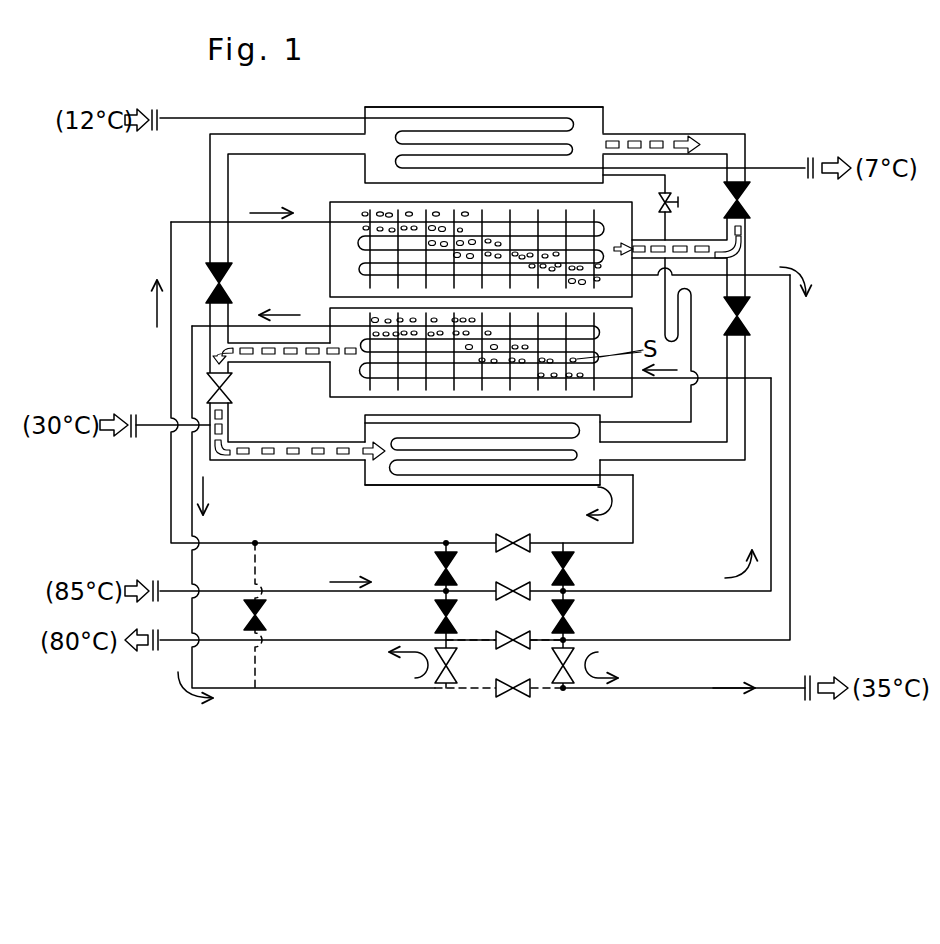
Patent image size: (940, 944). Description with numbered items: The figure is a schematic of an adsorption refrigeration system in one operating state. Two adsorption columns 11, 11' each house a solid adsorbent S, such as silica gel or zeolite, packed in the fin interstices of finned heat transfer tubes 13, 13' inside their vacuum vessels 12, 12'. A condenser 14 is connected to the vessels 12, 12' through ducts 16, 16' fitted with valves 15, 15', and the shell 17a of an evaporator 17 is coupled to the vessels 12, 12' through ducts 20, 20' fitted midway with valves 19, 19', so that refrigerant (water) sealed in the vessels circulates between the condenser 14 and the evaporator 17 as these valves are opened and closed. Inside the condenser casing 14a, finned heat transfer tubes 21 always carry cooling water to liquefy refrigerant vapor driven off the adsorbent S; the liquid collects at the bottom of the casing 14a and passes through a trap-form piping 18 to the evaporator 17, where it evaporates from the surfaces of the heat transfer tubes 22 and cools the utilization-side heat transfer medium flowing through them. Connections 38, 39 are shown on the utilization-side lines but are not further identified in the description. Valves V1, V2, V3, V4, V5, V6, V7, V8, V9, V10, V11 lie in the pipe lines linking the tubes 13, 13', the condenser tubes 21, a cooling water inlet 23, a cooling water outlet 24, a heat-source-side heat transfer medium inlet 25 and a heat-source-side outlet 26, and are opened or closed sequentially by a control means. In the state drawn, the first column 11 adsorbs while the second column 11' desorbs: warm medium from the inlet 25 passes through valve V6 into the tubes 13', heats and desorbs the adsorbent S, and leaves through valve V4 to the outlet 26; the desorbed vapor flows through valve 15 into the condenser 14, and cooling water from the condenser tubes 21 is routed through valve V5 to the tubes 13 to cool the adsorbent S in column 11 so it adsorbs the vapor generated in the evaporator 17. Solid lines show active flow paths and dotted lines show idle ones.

The first adsorption column 11 is at (448, 249).
The second adsorption column 11' is at (447, 364).
The vacuum vessel 12 is at (433, 234).
The vacuum vessel 12' is at (433, 337).
The heat transfer tubes 13 is at (480, 229).
The heat transfer tubes 13' is at (481, 339).
The condenser 14 is at (380, 487).
The condenser casing 14a is at (432, 487).
The valve 15 is at (247, 386).
The valve 15' is at (761, 316).
The duct 16 is at (297, 457).
The duct 16' is at (672, 425).
The evaporator 17 is at (555, 105).
The evaporator shell 17a is at (417, 105).
The piping 18 is at (694, 368).
The valve 19 is at (760, 199).
The valve 19' is at (252, 280).
The duct 20 is at (674, 188).
The duct 20' is at (256, 253).
The finned heat transfer tubes 21 is at (502, 462).
The heat transfer tubes 22 is at (485, 131).
The cooling water inlet 23 is at (122, 412).
The cooling water outlet 24 is at (815, 675).
The heat transfer medium inlet 25 is at (153, 577).
The heat transfer medium outlet 26 is at (154, 658).
The chilled water inlet connection 38 is at (153, 108).
The chilled water outlet connection 39 is at (818, 155).
The solid adsorbent S is at (380, 216).
The valve V1 is at (268, 608).
The valve V2 is at (433, 562).
The valve V3 is at (433, 607).
The valve V4 is at (460, 668).
The valve V5 is at (522, 549).
The valve V6 is at (522, 597).
The valve V7 is at (522, 646).
The valve V8 is at (508, 693).
The valve V9 is at (577, 560).
The valve V10 is at (577, 608).
The valve V11 is at (573, 662).